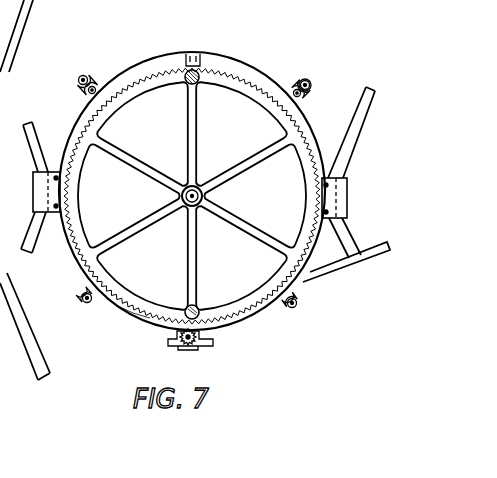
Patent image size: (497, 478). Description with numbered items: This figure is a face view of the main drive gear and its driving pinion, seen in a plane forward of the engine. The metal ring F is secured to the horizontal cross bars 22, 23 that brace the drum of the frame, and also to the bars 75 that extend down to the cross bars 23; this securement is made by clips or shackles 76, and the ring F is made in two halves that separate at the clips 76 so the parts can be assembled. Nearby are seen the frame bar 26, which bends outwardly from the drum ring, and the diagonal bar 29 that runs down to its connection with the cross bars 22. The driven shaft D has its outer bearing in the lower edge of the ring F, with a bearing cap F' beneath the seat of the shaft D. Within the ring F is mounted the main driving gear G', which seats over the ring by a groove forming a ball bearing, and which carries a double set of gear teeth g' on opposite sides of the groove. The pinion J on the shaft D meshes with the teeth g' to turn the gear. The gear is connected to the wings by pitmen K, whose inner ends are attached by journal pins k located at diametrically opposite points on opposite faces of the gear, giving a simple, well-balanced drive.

The bar 26 is at (8, 52).
The cross bar 22 is at (93, 80).
The diagonal bar 29 is at (312, 80).
The bar 75 is at (30, 137).
The clip 76 is at (40, 193).
The cross bar 23 is at (87, 305).
The pitman K is at (365, 252).
The metal ring F is at (192, 202).
The bearing cap F' is at (211, 353).
The driven shaft D is at (176, 344).
The pinion J is at (188, 346).
The gear wheel G' is at (192, 196).
The gear teeth g' is at (139, 296).
The journal pin k is at (186, 70).